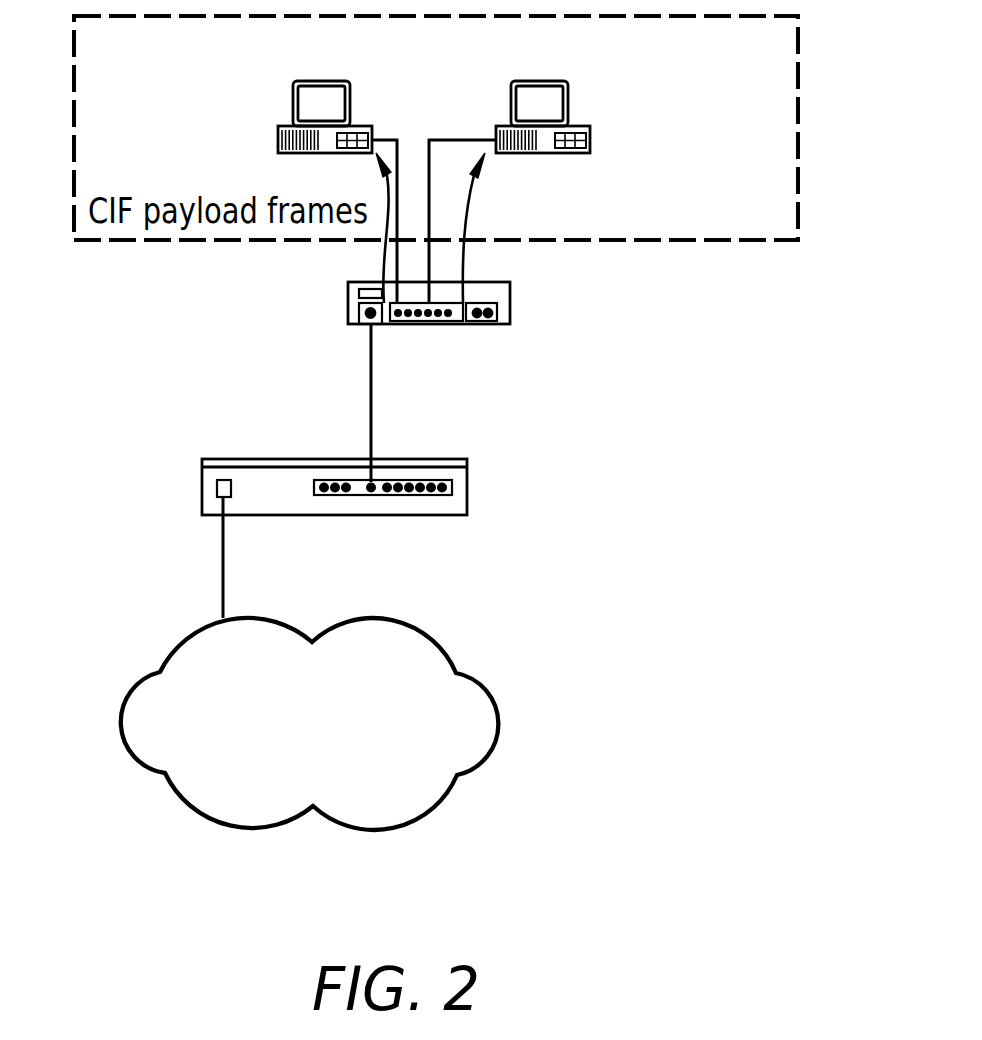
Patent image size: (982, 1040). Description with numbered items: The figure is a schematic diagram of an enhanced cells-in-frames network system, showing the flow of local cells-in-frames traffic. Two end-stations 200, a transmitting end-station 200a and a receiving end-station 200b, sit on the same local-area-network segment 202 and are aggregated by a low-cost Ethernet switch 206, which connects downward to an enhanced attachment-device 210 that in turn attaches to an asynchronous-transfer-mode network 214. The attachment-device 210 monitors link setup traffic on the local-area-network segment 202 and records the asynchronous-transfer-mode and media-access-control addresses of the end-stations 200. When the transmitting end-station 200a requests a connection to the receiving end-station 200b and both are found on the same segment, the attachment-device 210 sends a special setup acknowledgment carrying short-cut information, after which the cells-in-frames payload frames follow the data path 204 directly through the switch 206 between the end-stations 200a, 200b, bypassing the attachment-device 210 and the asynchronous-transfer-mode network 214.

The end-stations 200 is at (657, 65).
The transmitting end-station 200a is at (325, 166).
The receiving end-station 200b is at (525, 171).
The IEEE 802 local-area-network segment 202 is at (490, 128).
The data path 204 is at (477, 228).
The Ethernet switch 206 is at (475, 372).
The enhanced attachment-device 210 is at (393, 533).
The asynchronous-transfer-mode network 214 is at (267, 724).